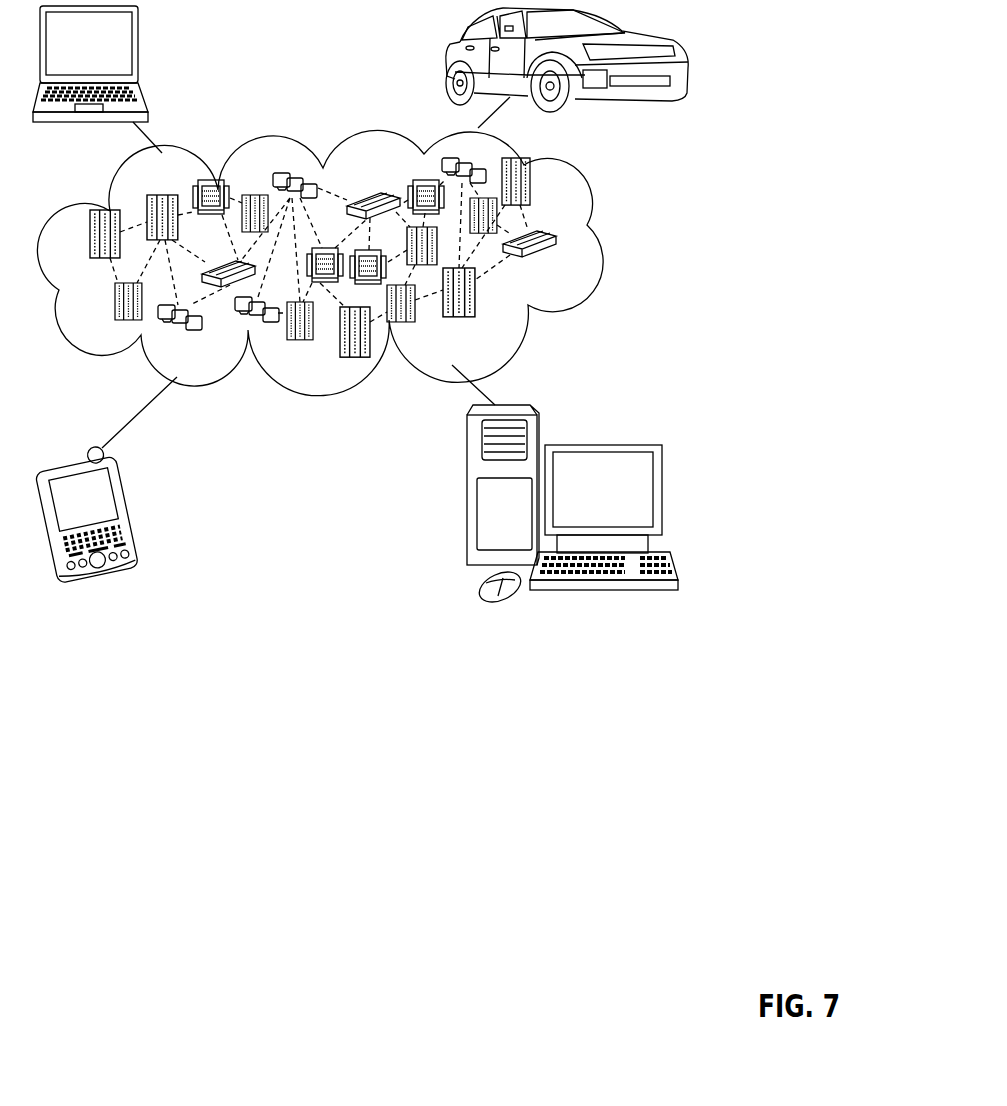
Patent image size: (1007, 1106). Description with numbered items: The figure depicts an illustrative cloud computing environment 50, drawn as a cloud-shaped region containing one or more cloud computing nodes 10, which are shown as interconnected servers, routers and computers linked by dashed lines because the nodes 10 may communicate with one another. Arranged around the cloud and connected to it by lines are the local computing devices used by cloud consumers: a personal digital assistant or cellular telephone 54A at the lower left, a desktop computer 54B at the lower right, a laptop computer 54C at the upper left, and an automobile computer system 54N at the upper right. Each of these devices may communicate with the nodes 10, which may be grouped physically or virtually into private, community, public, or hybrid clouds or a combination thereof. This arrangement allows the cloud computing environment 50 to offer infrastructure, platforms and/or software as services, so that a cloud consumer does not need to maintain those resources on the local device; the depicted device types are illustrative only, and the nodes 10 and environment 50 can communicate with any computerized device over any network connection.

The cloud computing node 10 is at (561, 266).
The cloud computing environment 50 is at (603, 241).
The personal digital assistant or cellular telephone 54A is at (133, 513).
The desktop computer 54B is at (612, 430).
The laptop computer 54C is at (137, 47).
The automobile computer system 54N is at (446, 60).